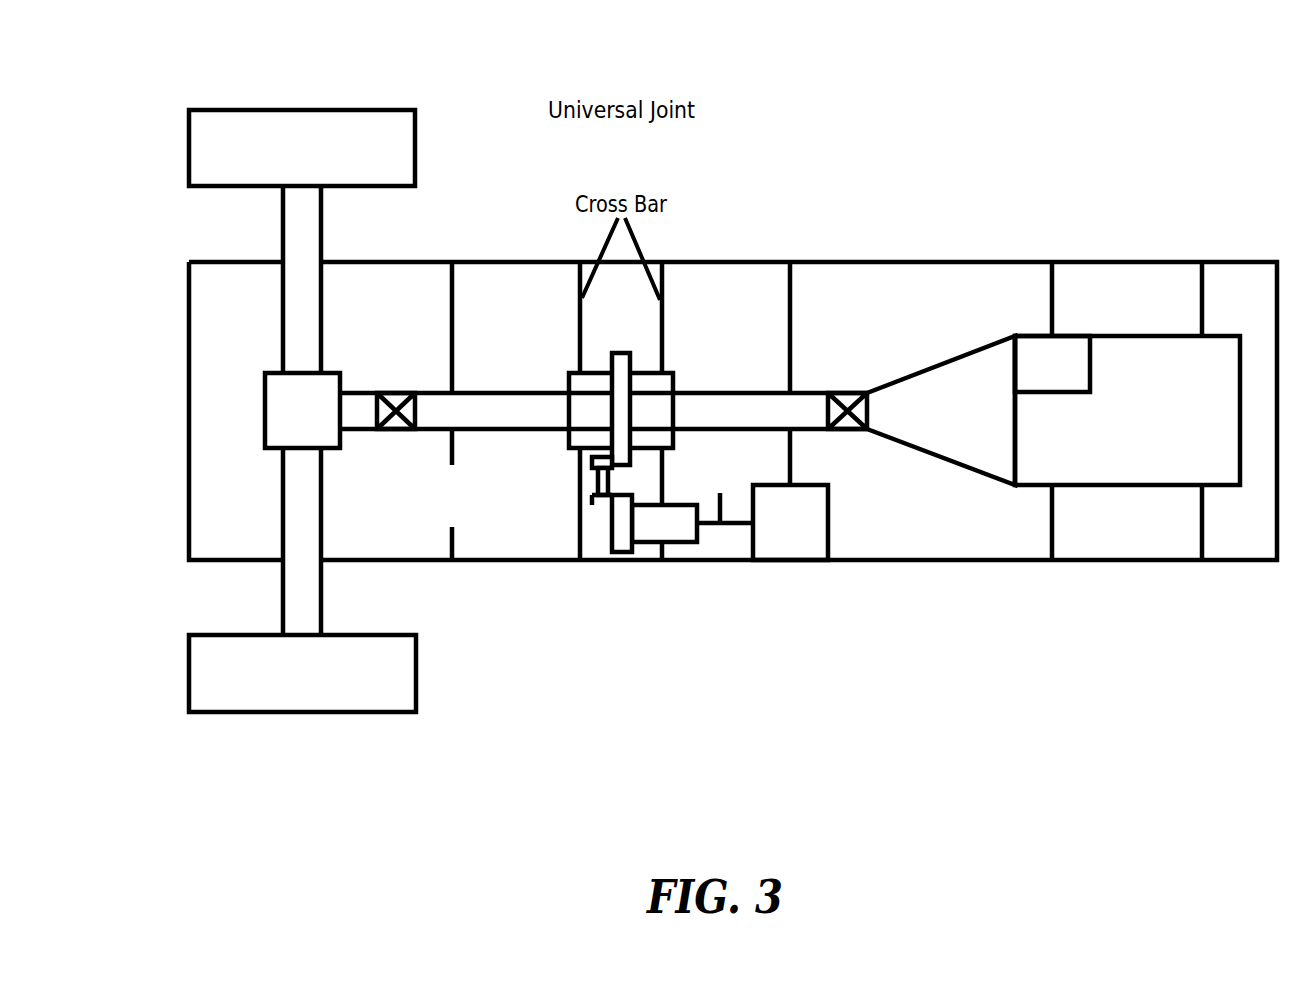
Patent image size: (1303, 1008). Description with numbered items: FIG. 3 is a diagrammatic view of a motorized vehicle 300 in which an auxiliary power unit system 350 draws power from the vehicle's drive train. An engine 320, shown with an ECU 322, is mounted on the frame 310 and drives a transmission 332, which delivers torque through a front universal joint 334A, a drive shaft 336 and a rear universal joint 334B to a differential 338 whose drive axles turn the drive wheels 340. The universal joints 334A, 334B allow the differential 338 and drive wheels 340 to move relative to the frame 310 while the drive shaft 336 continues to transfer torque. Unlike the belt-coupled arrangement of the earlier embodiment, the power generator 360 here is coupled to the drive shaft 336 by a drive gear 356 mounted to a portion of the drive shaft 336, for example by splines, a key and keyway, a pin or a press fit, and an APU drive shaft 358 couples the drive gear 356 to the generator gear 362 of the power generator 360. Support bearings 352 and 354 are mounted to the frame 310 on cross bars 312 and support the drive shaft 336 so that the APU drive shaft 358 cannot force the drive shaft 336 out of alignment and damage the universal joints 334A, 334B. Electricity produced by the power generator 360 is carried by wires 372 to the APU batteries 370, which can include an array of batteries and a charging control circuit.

The motorized vehicle 300 is at (1090, 92).
The frame 310 is at (783, 261).
The cross bars 312 is at (790, 297).
The engine 320 is at (1127, 410).
The ECU 322 is at (1115, 297).
The transmission 332 is at (941, 410).
The universal joint 334A is at (668, 138).
The universal joint 334B is at (567, 138).
The drive shaft 336 is at (603, 411).
The differential 338 is at (283, 411).
The drive wheel 340 is at (302, 411).
The auxiliary power unit 350 is at (632, 592).
The support bearing 352 is at (595, 417).
The support bearing 354 is at (662, 402).
The drive gear 356 is at (620, 402).
The APU drive shaft 358 is at (597, 497).
The power generator 360 is at (677, 523).
The generator gear 362 is at (632, 543).
The APU batteries 370 is at (790, 542).
The electrical connection 372 is at (725, 492).